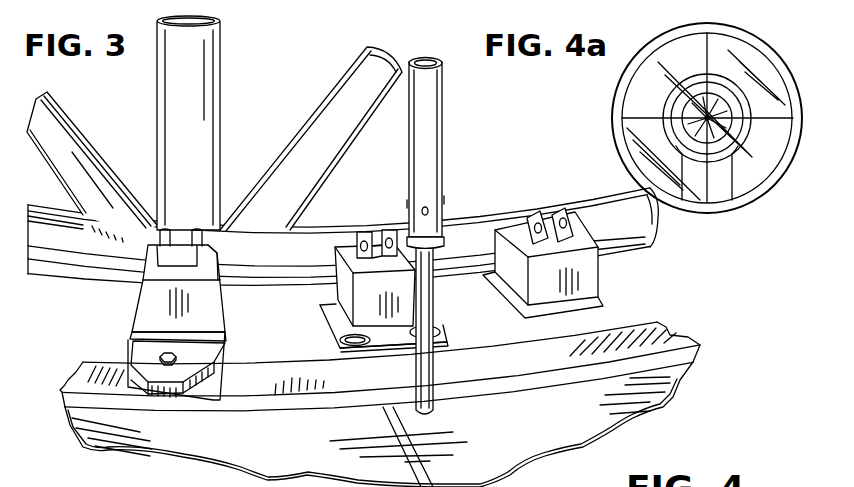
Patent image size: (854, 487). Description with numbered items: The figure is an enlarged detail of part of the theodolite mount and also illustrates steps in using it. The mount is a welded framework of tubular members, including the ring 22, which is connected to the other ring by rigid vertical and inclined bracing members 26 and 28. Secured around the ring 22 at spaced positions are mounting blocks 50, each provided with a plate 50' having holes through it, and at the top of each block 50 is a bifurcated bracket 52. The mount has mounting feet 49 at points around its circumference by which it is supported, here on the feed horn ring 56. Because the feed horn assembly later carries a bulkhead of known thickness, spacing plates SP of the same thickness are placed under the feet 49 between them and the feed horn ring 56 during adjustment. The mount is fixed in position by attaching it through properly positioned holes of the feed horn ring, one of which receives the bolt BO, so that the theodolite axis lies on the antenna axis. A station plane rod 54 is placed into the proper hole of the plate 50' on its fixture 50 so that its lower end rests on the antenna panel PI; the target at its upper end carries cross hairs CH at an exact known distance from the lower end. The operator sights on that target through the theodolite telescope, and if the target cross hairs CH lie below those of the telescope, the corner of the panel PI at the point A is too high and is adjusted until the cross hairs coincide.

In FIG. 3, the ring 22 is at (460, 226).
In FIG. 3, the vertical bracing member 26 is at (207, 60).
In FIG. 3, the inclined bracing member 28 is at (93, 170).
In FIG. 3, the mounting foot 49 is at (379, 424).
In FIG. 3, the mounting block 50 is at (380, 276).
In FIG. 3, the plate 50' is at (401, 328).
In FIG. 3, the bifurcated bracket 52 is at (543, 214).
In FIG. 3, the station plane rod 54 is at (433, 122).
In FIG. 4a, the station plane rod 54 is at (733, 168).
In FIG. 3, the feed horn ring 56 is at (632, 330).
In FIG. 3, the bolt BO is at (160, 357).
In FIG. 3, the spacing plate SP is at (217, 368).
In FIG. 3, the point A is at (447, 412).
In FIG. 3, the antenna panel PI is at (281, 450).
In FIG. 4a, the cross hairs CH is at (733, 205).